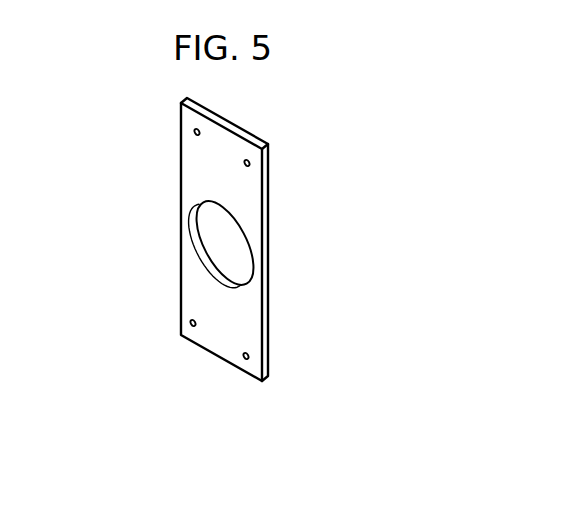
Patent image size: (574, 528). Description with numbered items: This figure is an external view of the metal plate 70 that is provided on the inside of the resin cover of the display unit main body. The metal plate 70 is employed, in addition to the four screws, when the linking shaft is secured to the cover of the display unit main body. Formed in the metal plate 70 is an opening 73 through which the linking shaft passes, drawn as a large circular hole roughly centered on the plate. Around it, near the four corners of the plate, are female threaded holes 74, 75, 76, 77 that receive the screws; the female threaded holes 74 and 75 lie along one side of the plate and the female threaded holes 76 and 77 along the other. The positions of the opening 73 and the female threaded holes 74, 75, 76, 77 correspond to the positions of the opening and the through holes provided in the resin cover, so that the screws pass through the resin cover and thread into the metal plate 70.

The metal plate 70 is at (289, 186).
The opening 73 is at (226, 250).
The female threaded hole 74 is at (186, 129).
The female threaded hole 75 is at (178, 322).
The female threaded hole 76 is at (243, 164).
The female threaded hole 77 is at (238, 357).